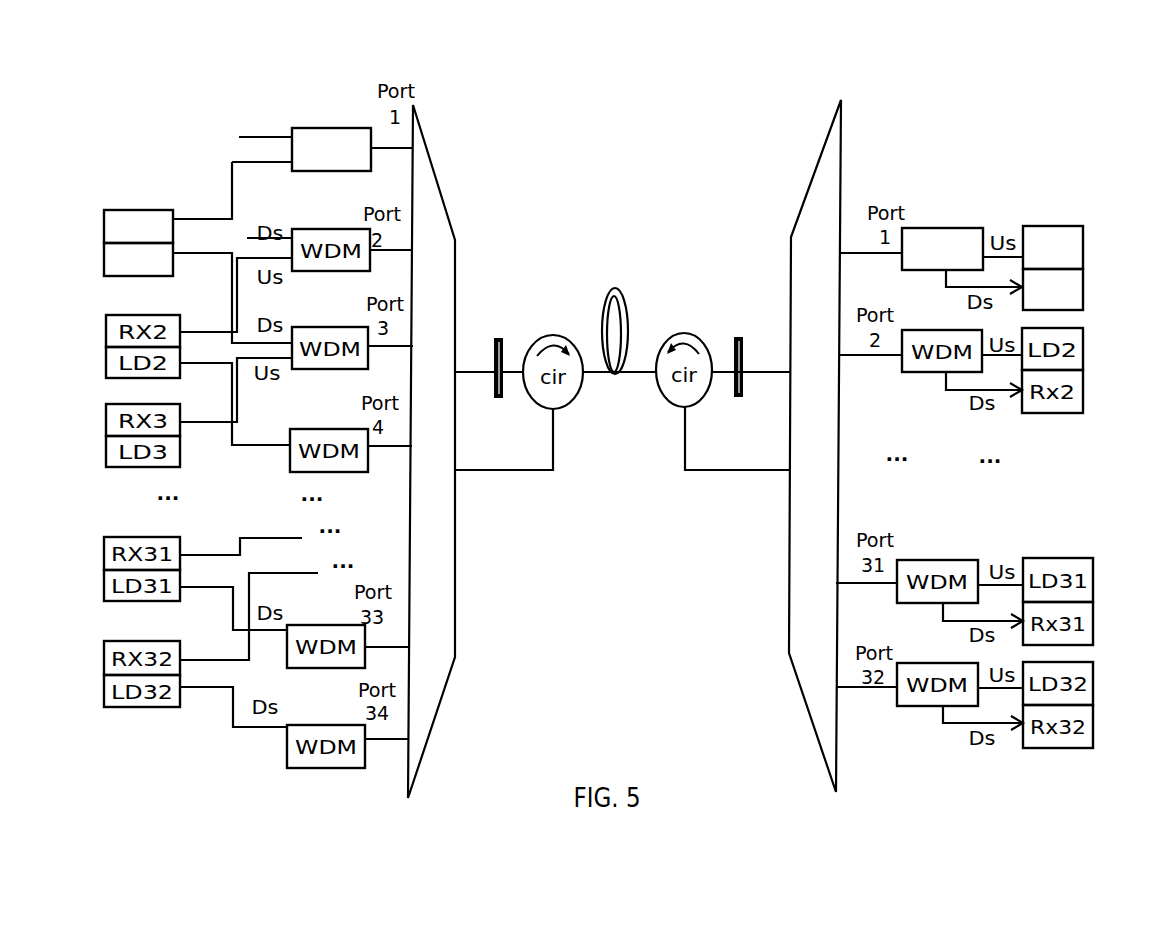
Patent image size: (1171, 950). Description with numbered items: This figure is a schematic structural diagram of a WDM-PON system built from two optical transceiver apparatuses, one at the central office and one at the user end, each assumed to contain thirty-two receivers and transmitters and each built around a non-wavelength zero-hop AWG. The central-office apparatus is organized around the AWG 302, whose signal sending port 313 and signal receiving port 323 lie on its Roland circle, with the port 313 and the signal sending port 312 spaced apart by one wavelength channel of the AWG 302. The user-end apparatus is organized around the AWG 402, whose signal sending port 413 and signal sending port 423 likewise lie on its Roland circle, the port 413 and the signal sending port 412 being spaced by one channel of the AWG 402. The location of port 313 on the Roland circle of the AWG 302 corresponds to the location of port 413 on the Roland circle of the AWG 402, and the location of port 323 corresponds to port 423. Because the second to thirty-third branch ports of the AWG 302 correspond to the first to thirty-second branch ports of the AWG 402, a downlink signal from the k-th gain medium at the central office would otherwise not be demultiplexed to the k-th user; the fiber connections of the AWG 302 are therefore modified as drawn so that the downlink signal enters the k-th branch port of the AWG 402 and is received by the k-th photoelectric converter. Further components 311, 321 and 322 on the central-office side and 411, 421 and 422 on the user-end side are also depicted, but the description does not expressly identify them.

The AWG 302 is at (433, 193).
The laser diode LD1 311 is at (103, 242).
The receiver RX1 321 is at (137, 210).
The WDM coupler 322 is at (373, 135).
The signal sending port 312 is at (500, 337).
The signal sending port 313 is at (472, 368).
The signal receiving port 323 is at (507, 473).
The AWG 402 is at (815, 190).
The laser diode LD1 411 is at (1087, 240).
The receiver Rx1 421 is at (1085, 295).
The WDM coupler 422 is at (858, 250).
The signal sending port 412 is at (742, 335).
The signal sending port 413 is at (773, 368).
The signal sending port 423 is at (755, 473).